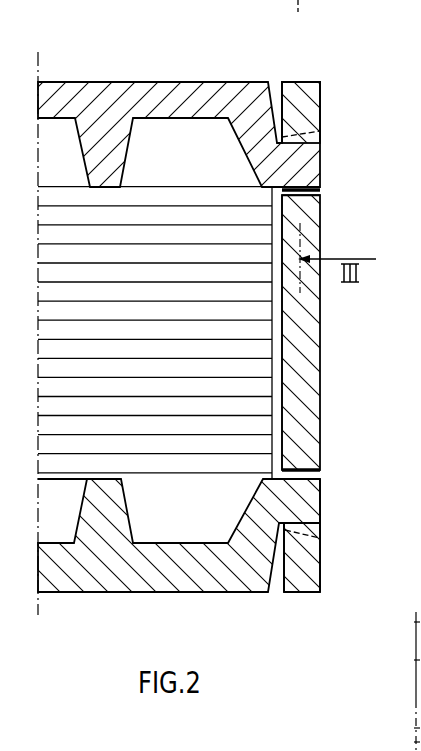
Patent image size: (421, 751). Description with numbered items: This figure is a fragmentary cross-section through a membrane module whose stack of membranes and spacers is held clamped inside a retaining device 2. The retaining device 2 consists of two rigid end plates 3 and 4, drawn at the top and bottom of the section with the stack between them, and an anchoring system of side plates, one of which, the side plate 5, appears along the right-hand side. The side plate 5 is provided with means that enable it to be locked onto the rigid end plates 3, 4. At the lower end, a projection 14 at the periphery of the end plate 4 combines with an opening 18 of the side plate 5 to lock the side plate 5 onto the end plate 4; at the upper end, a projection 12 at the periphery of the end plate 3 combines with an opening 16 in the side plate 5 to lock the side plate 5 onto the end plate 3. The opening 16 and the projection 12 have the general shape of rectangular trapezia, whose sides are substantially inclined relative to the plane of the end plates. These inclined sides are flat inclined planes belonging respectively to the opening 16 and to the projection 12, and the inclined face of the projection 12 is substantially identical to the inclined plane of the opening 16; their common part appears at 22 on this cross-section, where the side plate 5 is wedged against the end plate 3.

The retaining device 2 is at (132, 72).
The end plate 3 is at (62, 98).
The end plate 4 is at (200, 583).
The side plate 5 is at (305, 306).
The projection 12 is at (312, 153).
The projection 14 is at (303, 501).
The opening 16 is at (320, 191).
The opening 18 is at (318, 472).
The common part of inclined faces 22 is at (305, 126).